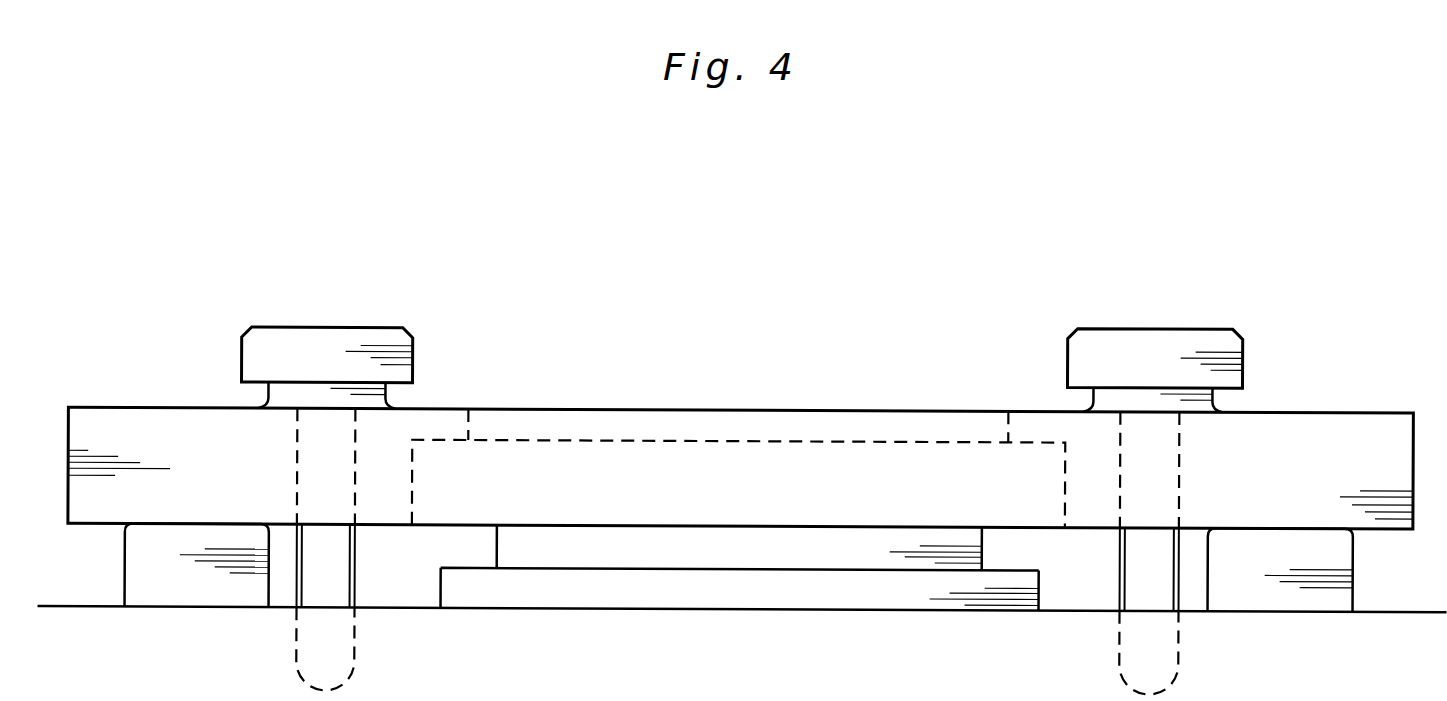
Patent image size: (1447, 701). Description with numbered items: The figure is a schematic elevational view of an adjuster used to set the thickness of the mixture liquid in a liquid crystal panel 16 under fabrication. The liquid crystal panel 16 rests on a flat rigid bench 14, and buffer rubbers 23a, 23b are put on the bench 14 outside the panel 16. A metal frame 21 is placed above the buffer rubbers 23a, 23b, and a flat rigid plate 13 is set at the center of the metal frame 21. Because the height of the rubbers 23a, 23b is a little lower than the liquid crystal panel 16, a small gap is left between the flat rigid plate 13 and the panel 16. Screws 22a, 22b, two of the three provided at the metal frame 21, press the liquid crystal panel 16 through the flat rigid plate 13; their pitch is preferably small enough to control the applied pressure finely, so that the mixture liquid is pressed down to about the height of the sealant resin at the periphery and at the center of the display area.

The flat rigid plate 13 is at (810, 459).
The flat rigid bench 14 is at (1408, 635).
The liquid crystal panel 16 is at (1048, 528).
The metal frame 21 is at (1296, 425).
The screw 22a is at (357, 344).
The screw 22b is at (1167, 338).
The buffer rubber 23a is at (138, 578).
The buffer rubber 23b is at (1320, 550).